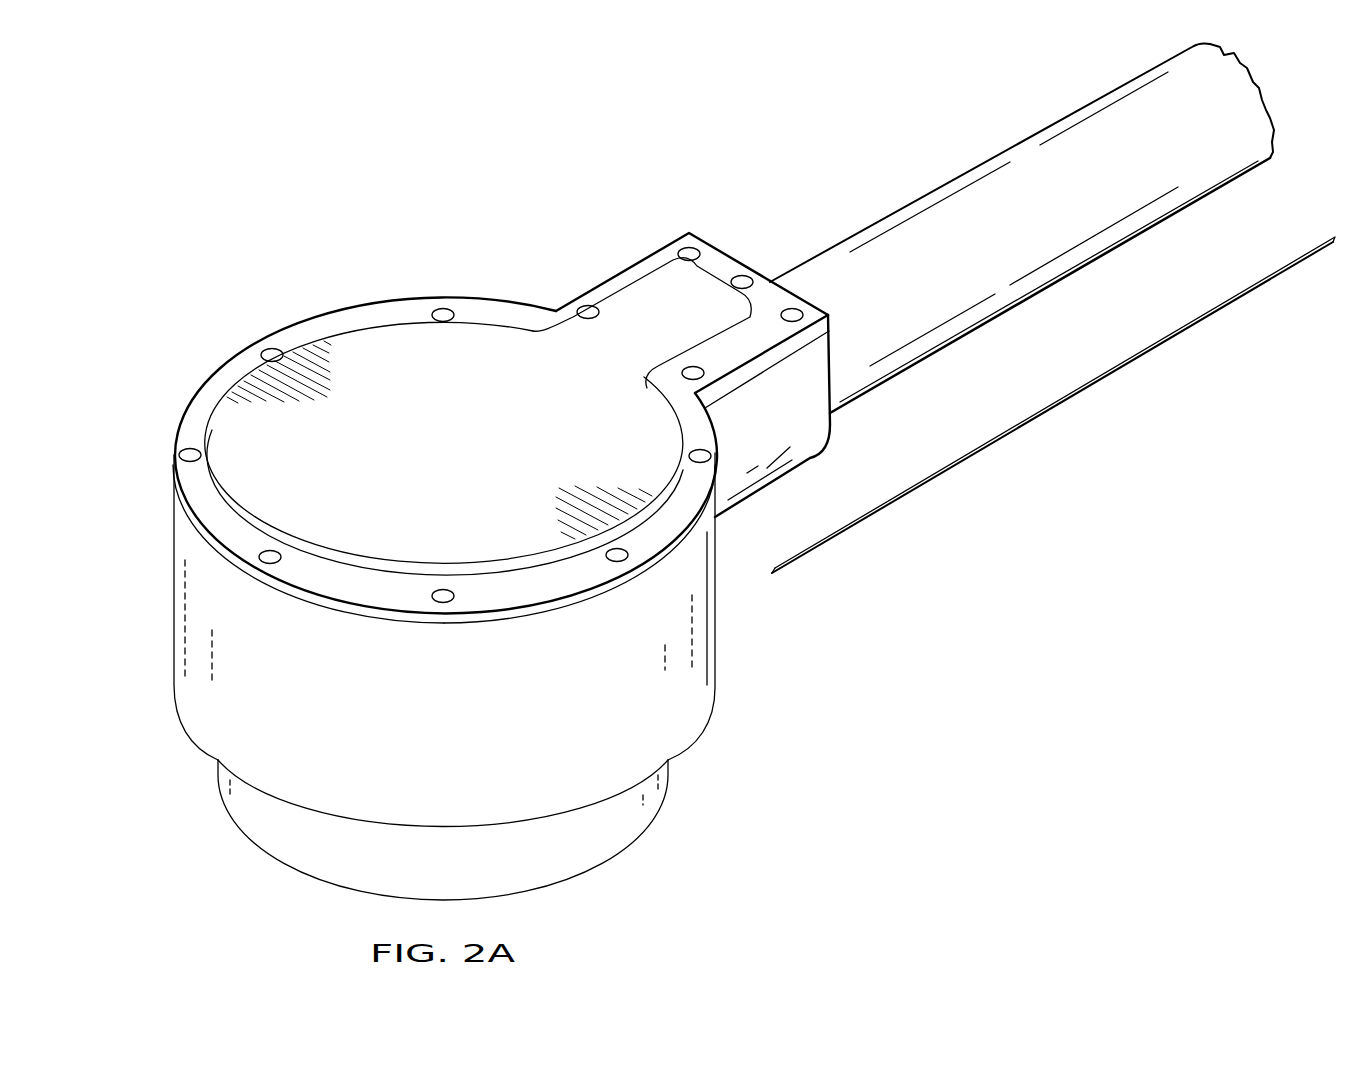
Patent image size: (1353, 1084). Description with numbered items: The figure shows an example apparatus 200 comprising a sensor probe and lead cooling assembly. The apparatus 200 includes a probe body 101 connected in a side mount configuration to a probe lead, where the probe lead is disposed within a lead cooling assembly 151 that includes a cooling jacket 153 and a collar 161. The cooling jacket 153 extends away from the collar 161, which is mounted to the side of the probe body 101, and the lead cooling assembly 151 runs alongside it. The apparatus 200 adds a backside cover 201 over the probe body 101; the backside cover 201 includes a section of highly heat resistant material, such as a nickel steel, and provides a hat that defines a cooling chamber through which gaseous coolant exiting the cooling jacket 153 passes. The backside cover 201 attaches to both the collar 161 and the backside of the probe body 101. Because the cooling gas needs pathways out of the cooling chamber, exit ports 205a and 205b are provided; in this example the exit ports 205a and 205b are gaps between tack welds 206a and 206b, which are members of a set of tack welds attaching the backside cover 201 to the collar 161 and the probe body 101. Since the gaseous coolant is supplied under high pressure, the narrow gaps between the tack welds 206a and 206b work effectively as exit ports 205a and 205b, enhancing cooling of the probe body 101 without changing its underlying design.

The apparatus 200 is at (259, 142).
The probe body 101 is at (138, 620).
The backside cover 201 is at (150, 416).
The exit port 205a is at (545, 612).
The exit port 205b is at (358, 614).
The tack weld 206a is at (450, 603).
The tack weld 206b is at (278, 564).
The collar 161 is at (843, 446).
The cooling jacket 153 is at (947, 158).
The lead cooling assembly 151 is at (1052, 404).